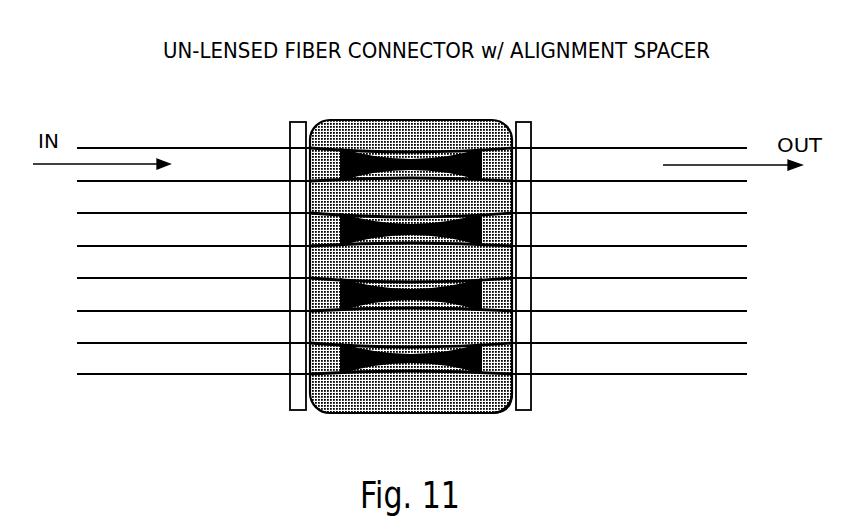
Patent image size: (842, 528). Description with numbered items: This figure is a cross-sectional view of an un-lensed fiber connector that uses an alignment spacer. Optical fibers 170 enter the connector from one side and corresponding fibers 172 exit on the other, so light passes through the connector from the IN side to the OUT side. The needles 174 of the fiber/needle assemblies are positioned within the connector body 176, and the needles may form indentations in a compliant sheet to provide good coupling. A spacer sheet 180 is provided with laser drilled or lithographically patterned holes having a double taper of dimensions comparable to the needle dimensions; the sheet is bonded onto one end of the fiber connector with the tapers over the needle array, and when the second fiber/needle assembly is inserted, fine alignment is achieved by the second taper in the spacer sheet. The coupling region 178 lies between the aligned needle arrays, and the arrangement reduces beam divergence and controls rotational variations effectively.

The input optical fibers 170 is at (220, 162).
The output optical fibers 172 is at (700, 158).
The needles 174 is at (323, 128).
The connector body 176 is at (413, 147).
The lens element 178 is at (412, 376).
The spacer sheet 180 is at (473, 413).